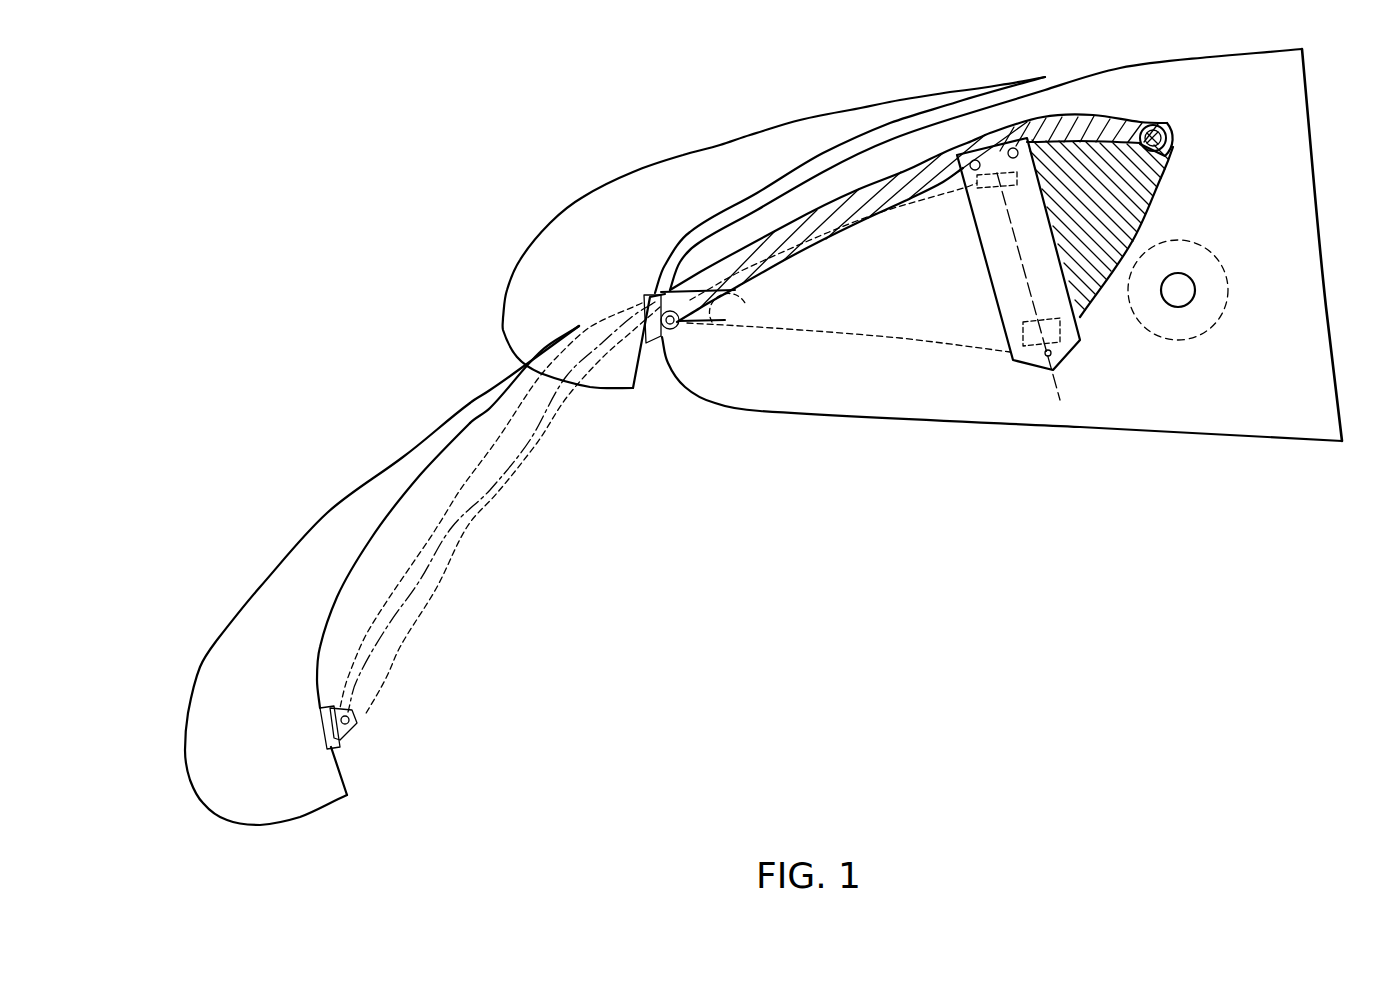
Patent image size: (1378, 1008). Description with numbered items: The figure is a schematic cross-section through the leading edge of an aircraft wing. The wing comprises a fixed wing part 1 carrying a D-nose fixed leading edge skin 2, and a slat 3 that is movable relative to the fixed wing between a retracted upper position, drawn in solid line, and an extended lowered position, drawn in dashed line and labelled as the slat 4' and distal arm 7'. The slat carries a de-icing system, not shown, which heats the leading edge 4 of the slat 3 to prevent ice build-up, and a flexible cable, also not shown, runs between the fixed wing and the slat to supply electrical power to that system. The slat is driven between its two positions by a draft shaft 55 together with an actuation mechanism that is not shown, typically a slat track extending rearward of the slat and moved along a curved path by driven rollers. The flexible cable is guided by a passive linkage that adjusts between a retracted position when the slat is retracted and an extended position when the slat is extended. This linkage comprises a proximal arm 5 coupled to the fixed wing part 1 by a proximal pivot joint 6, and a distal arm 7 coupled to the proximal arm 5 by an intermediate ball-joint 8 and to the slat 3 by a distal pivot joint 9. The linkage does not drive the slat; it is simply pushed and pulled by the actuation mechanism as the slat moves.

The fixed wing part 1 is at (1305, 337).
The D-nose fixed leading edge skin 2 is at (745, 197).
The slat 3 is at (516, 266).
The leading edge of the slat 4 is at (520, 374).
The slat in extended lowered position 4' is at (316, 623).
The proximal arm 5 is at (1133, 223).
The proximal pivot joint 6 is at (1000, 330).
The distal arm 7 is at (921, 183).
The distal arm in extended position 7' is at (368, 735).
The intermediate ball-joint 8 is at (1172, 130).
The distal pivot joint 9 is at (678, 326).
The draft shaft 55 is at (1198, 290).